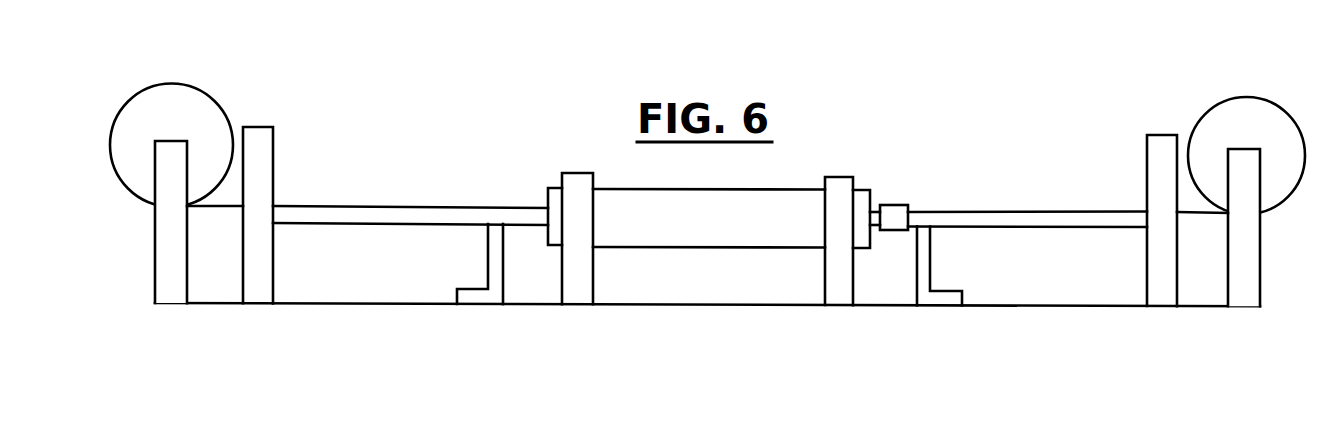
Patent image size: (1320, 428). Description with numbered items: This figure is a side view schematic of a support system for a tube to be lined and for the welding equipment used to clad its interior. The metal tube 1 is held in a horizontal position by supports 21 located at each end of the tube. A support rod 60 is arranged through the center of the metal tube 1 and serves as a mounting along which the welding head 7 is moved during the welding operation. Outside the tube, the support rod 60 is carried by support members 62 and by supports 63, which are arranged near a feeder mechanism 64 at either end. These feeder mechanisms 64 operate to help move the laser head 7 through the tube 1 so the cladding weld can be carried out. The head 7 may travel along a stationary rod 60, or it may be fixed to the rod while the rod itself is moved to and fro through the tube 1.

The metal tube 1 is at (752, 203).
The welding head 7 is at (897, 212).
The supports 21 is at (850, 326).
The support rod 60 is at (413, 211).
The support members 62 is at (469, 298).
The supports 63 is at (266, 178).
The feeder mechanism 64 is at (195, 112).